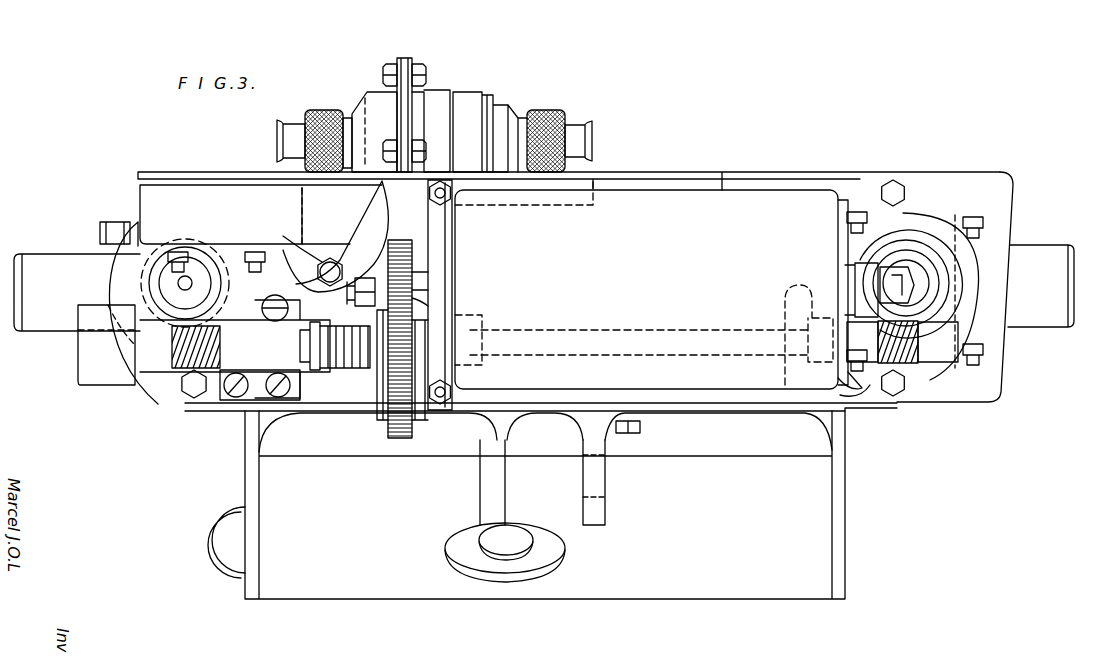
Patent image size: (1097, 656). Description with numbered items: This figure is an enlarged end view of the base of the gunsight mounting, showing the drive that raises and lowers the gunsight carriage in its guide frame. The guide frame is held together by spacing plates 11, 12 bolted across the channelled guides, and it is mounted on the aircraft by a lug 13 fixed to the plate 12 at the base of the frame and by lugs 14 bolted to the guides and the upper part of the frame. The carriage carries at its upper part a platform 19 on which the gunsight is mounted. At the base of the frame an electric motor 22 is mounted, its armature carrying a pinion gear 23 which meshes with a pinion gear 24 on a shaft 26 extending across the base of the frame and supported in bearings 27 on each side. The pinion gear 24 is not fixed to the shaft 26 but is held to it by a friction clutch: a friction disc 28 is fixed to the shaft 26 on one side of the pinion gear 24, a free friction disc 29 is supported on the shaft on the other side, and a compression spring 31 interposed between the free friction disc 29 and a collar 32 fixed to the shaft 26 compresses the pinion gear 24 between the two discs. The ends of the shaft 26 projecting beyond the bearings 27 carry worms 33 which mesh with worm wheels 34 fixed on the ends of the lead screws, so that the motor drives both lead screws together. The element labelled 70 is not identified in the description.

The spacing plate 11 is at (637, 179).
The spacing plate 12 is at (244, 400).
The lug 13 is at (604, 510).
The lugs 14 is at (55, 312).
The platform 19 is at (688, 583).
The electric motor 22 is at (697, 205).
The pinion gear 23 is at (405, 242).
The pinion gear 24 is at (392, 437).
The shaft 26 is at (617, 330).
The bearings 27 is at (230, 392).
The friction disc 28 is at (418, 408).
The free friction disc 29 is at (378, 390).
The compression spring 31 is at (352, 364).
The collar 32 is at (331, 364).
The worms 33 is at (185, 368).
The worm wheels 34 is at (195, 290).
The coupling 70 is at (748, 186).